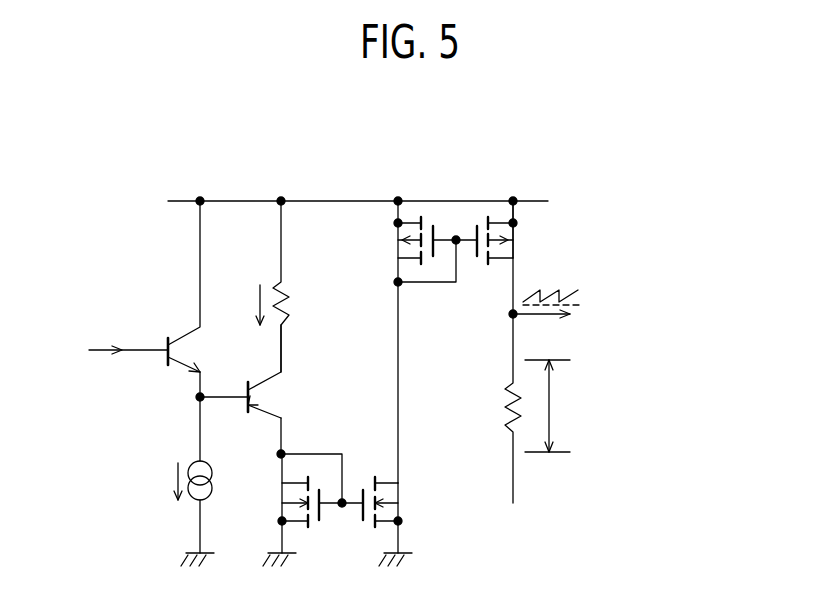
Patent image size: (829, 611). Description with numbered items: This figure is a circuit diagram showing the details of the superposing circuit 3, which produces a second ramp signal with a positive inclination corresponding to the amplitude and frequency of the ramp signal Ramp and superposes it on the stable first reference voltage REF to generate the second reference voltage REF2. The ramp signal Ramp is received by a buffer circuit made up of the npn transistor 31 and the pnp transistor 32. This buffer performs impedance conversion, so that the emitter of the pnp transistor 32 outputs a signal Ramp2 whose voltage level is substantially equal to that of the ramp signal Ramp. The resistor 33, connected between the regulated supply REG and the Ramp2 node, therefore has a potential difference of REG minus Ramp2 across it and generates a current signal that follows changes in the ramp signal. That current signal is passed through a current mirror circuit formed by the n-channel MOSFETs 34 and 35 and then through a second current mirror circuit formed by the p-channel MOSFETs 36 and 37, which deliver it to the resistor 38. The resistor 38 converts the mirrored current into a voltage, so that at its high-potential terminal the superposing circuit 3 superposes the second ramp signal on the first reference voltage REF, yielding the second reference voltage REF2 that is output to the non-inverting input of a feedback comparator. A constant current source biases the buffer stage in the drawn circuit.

The superposing circuit 3 is at (118, 197).
The npn transistor 31 is at (187, 355).
The pnp transistor 32 is at (272, 408).
The resistor 33 is at (292, 311).
The n-channel MOSFET 34 is at (290, 501).
The n-channel MOSFET 35 is at (437, 496).
The p-channel MOSFET 36 is at (404, 252).
The p-channel MOSFET 37 is at (511, 251).
The resistor 38 is at (506, 418).